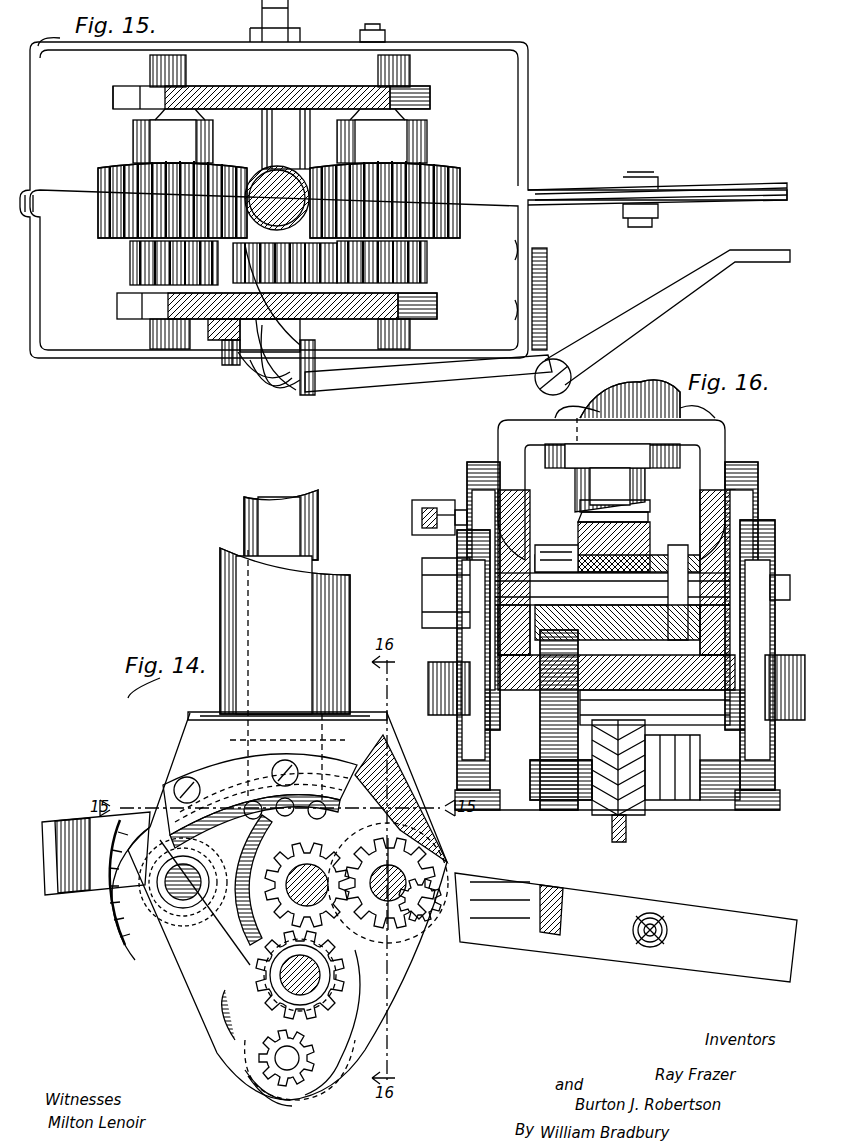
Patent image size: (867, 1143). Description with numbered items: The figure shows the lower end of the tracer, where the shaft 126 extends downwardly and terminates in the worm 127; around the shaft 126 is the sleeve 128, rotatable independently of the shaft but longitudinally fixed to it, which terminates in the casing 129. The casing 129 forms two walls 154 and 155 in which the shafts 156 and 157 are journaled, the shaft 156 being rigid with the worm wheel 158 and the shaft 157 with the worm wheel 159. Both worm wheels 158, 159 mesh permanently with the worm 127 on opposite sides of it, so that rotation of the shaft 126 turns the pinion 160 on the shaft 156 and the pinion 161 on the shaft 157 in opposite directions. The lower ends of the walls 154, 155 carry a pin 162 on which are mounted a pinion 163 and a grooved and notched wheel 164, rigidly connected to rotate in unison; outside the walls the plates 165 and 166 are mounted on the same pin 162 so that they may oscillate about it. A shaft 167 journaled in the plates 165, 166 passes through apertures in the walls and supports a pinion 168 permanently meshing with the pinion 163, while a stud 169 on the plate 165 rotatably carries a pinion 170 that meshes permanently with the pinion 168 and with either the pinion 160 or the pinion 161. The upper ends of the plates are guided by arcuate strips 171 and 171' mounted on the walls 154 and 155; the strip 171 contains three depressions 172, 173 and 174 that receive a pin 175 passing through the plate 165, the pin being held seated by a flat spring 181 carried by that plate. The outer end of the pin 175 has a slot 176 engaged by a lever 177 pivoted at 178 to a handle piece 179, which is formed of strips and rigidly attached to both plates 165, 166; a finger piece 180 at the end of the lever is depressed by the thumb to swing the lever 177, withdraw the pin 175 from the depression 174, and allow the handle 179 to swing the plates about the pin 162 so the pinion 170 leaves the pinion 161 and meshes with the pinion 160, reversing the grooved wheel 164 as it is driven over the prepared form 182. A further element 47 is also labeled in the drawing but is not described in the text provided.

In FIG. 16, the frame 47 is at (690, 825).
In FIG. 14, the frame 47 is at (181, 1013).
In FIG. 16, the shaft 126 is at (655, 385).
In FIG. 14, the shaft 126 is at (246, 498).
In FIG. 15, the worm 127 is at (252, 175).
In FIG. 16, the worm 127 is at (645, 512).
In FIG. 14, the worm 127 is at (250, 955).
In FIG. 16, the sleeve 128 is at (712, 405).
In FIG. 14, the sleeve 128 is at (350, 575).
In FIG. 15, the casing 129 is at (430, 85).
In FIG. 16, the casing 129 is at (498, 427).
In FIG. 14, the casing 129 is at (190, 712).
In FIG. 15, the wall 154 is at (437, 306).
In FIG. 16, the wall 154 is at (505, 462).
In FIG. 14, the wall 154 is at (395, 790).
In FIG. 15, the wall 155 is at (430, 98).
In FIG. 16, the wall 155 is at (720, 465).
In FIG. 14, the shaft 156 is at (145, 916).
In FIG. 16, the shaft 157 is at (614, 592).
In FIG. 14, the shaft 157 is at (450, 880).
In FIG. 15, the worm wheel 158 is at (100, 172).
In FIG. 14, the worm wheel 158 is at (125, 893).
In FIG. 15, the worm wheel 159 is at (458, 168).
In FIG. 16, the worm wheel 159 is at (648, 528).
In FIG. 14, the worm wheel 159 is at (435, 945).
In FIG. 15, the pinion 160 is at (130, 265).
In FIG. 14, the pinion 160 is at (178, 905).
In FIG. 15, the pinion 161 is at (427, 256).
In FIG. 16, the pinion 161 is at (560, 545).
In FIG. 14, the pinion 161 is at (440, 868).
In FIG. 16, the pin 162 is at (748, 790).
In FIG. 14, the pin 162 is at (282, 1062).
In FIG. 16, the pinion 163 is at (545, 800).
In FIG. 14, the pinion 163 is at (295, 1095).
In FIG. 16, the grooved and notched wheel 164 is at (605, 812).
In FIG. 14, the grooved and notched wheel 164 is at (258, 1100).
In FIG. 15, the plate 165 is at (228, 352).
In FIG. 16, the plate 165 is at (470, 640).
In FIG. 15, the plate 166 is at (385, 55).
In FIG. 16, the plate 166 is at (775, 520).
In FIG. 16, the shaft 167 is at (655, 699).
In FIG. 14, the shaft 167 is at (320, 980).
In FIG. 15, the pinion 168 is at (240, 330).
In FIG. 16, the pinion 168 is at (570, 690).
In FIG. 14, the pinion 168 is at (340, 1000).
In FIG. 14, the stud 169 is at (388, 883).
In FIG. 15, the pinion 170 is at (380, 405).
In FIG. 14, the pinion 170 is at (330, 925).
In FIG. 15, the arcuate strip 171 is at (147, 334).
In FIG. 16, the arcuate strip 171 is at (467, 589).
In FIG. 14, the arcuate strip 171 is at (169, 770).
In FIG. 15, the arcuate strip 171' is at (141, 71).
In FIG. 16, the arcuate strip 171' is at (761, 589).
In FIG. 15, the depression 172 is at (262, 366).
In FIG. 14, the depression 172 is at (215, 790).
In FIG. 15, the depression 173 is at (270, 380).
In FIG. 14, the depression 173 is at (275, 760).
In FIG. 15, the depression 174 is at (272, 385).
In FIG. 14, the depression 174 is at (330, 790).
In FIG. 15, the pin 175 is at (316, 372).
In FIG. 16, the pin 175 is at (458, 508).
In FIG. 16, the slot 176 is at (432, 500).
In FIG. 15, the lever 177 is at (440, 400).
In FIG. 15, the pivot 178 is at (560, 368).
In FIG. 15, the handle piece 179 is at (560, 183).
In FIG. 16, the handle piece 179 is at (445, 595).
In FIG. 14, the handle piece 179 is at (545, 940).
In FIG. 15, the finger piece 180 is at (755, 262).
In FIG. 15, the flat spring 181 is at (290, 400).
In FIG. 16, the flat spring 181 is at (440, 525).
In FIG. 16, the prepared form 182 is at (630, 830).